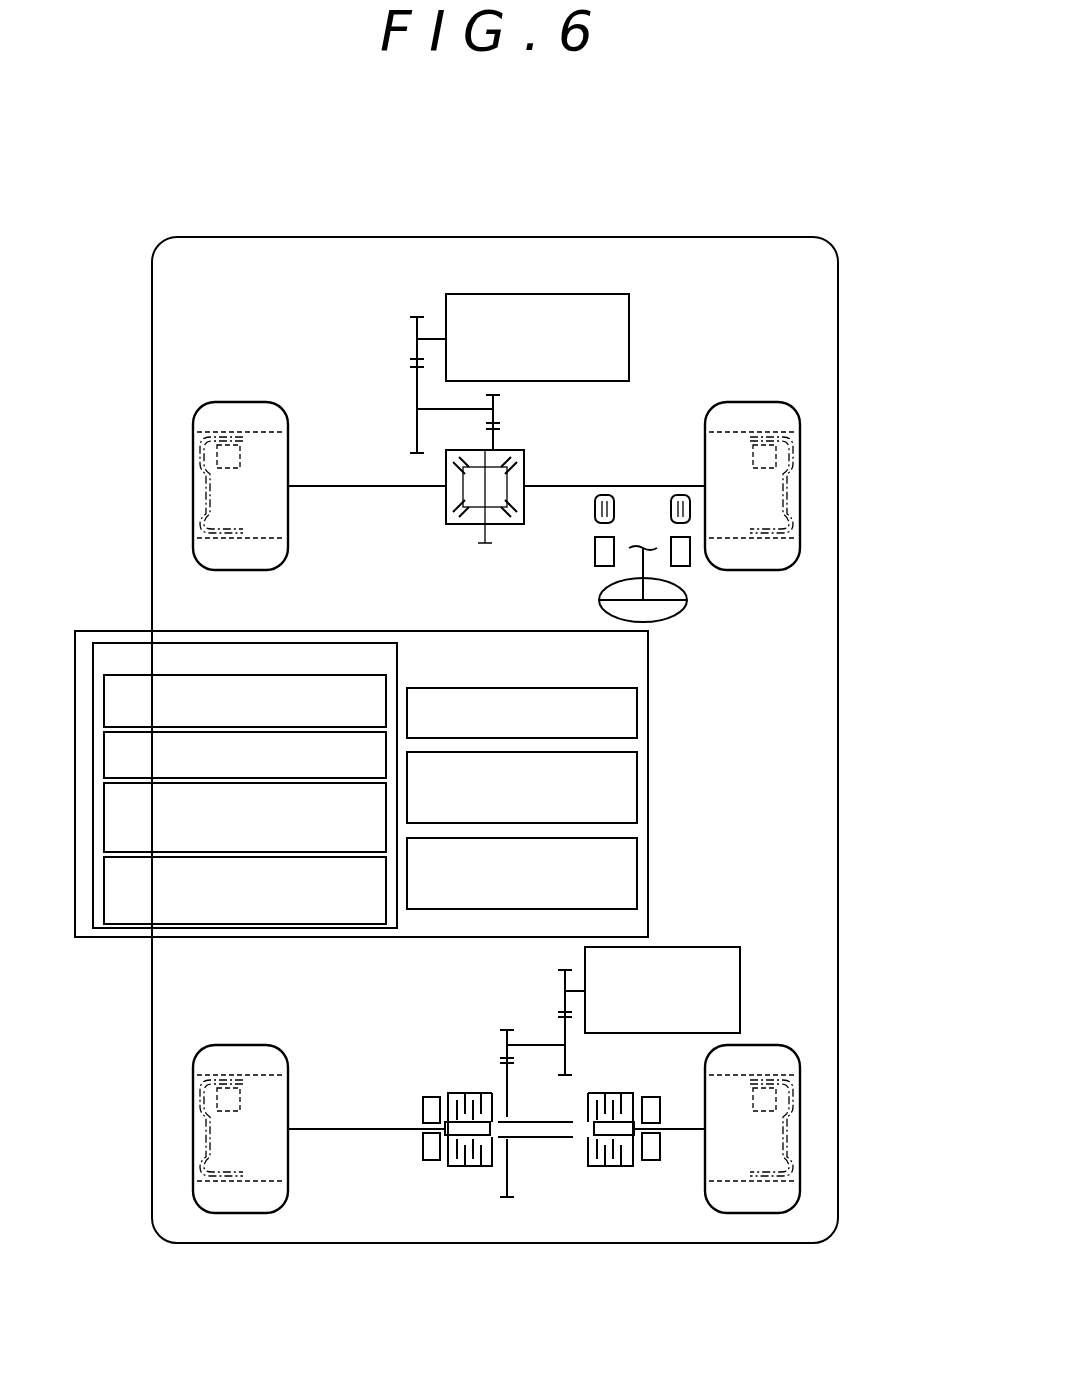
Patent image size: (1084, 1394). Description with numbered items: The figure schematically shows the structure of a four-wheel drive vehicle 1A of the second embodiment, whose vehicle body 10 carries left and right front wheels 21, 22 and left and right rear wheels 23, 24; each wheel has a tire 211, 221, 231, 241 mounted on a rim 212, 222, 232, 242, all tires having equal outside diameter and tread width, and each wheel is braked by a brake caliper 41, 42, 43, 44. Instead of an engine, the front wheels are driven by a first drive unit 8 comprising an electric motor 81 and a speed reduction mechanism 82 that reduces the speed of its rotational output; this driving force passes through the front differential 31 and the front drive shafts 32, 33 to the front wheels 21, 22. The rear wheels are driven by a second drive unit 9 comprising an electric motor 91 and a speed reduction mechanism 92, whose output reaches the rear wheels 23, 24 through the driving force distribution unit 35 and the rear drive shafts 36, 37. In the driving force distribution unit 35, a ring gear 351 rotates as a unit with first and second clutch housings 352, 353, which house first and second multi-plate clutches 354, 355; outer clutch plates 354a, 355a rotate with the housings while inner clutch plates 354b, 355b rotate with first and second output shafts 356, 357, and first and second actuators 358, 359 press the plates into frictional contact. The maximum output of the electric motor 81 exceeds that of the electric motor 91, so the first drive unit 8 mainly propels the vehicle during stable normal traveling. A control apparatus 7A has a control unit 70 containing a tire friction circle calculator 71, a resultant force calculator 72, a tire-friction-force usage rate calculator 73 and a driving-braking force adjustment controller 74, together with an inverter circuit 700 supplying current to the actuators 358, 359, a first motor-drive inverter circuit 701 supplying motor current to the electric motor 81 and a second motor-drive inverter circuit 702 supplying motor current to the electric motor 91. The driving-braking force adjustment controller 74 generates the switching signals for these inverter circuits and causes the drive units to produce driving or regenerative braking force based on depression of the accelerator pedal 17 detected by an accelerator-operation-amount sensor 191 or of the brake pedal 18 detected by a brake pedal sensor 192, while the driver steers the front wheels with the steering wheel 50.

The four-wheel drive vehicle 1A is at (190, 210).
The vehicle body 10 is at (703, 236).
The first drive unit 8 is at (539, 350).
The electric motor 81 is at (596, 294).
The speed reduction mechanism 82 is at (402, 343).
The front differential 31 is at (465, 528).
The front drive shaft 32 is at (352, 486).
The front drive shaft 33 is at (648, 486).
The left front wheel 21 is at (160, 477).
The tire 211 is at (193, 420).
The rim 212 is at (200, 472).
The right front wheel 22 is at (826, 477).
The tire 221 is at (802, 418).
The rim 222 is at (790, 478).
The left rear wheel 23 is at (160, 1121).
The tire 231 is at (193, 1067).
The rim 232 is at (200, 1117).
The right rear wheel 24 is at (826, 1121).
The tire 241 is at (802, 1065).
The rim 242 is at (790, 1128).
The brake caliper 41 is at (228, 446).
The brake caliper 42 is at (764, 446).
The brake caliper 43 is at (228, 1088).
The brake caliper 44 is at (764, 1088).
The accelerator pedal 17 is at (670, 513).
The brake pedal 18 is at (615, 509).
The accelerator-operation-amount sensor 191 is at (685, 567).
The brake pedal sensor 192 is at (600, 567).
The steering wheel 50 is at (673, 617).
The control apparatus 7A is at (98, 630).
The control unit 70 is at (93, 667).
The tire friction circle calculator 71 is at (104, 700).
The resultant force calculator 72 is at (104, 755).
The tire-friction-force usage rate calculator 73 is at (104, 820).
The driving-braking force adjustment controller 74 is at (104, 887).
The inverter circuit 700 is at (637, 712).
The first motor-drive inverter circuit 701 is at (637, 780).
The second motor-drive inverter circuit 702 is at (637, 863).
The second drive unit 9 is at (612, 1042).
The electric motor 91 is at (673, 946).
The speed reduction mechanism 92 is at (493, 1020).
The driving force distribution unit 35 is at (420, 1062).
The ring gear 351 is at (508, 1116).
The first clutch housing 352 is at (417, 1139).
The second clutch housing 353 is at (635, 1142).
The first multi-plate clutch 354 is at (478, 1167).
The outer clutch plates 354a is at (470, 1160).
The inner clutch plates 354b is at (438, 1146).
The second multi-plate clutch 355 is at (605, 1167).
The outer clutch plates 355a is at (603, 1153).
The inner clutch plates 355b is at (628, 1147).
The first output shaft 356 is at (452, 1128).
The second output shaft 357 is at (604, 1128).
The first actuator 358 is at (392, 1114).
The second actuator 359 is at (653, 1097).
The rear drive shaft 36 is at (330, 1128).
The rear drive shaft 37 is at (673, 1129).